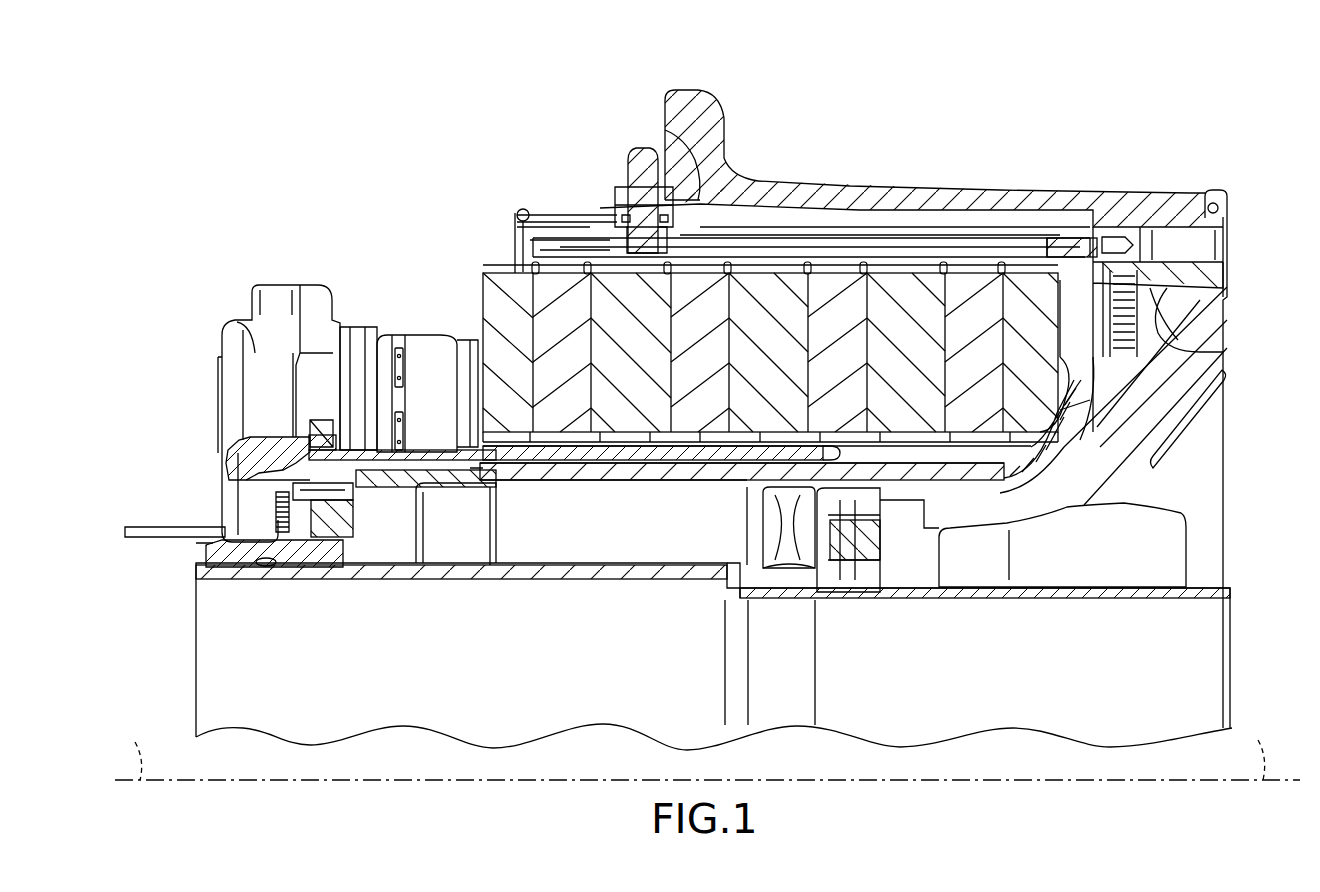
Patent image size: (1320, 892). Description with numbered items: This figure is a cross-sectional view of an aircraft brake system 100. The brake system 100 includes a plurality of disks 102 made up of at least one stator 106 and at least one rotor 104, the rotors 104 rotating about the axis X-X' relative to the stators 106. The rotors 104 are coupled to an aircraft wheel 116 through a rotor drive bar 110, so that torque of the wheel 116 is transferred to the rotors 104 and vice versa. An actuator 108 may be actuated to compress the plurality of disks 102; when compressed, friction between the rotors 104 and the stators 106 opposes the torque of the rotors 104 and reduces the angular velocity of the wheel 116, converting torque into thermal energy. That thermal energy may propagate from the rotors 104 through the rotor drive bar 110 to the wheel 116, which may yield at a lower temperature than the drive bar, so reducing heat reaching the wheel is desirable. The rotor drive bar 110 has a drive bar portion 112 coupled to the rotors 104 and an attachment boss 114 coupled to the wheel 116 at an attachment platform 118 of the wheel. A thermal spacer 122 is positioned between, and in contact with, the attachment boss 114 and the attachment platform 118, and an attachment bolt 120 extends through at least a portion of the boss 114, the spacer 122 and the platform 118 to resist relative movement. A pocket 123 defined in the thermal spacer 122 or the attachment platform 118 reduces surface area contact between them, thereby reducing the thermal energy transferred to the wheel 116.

The aircraft brake system 100 is at (325, 104).
The plurality of disks 102 is at (477, 266).
The rotor 104 is at (545, 420).
The stator 106 is at (645, 422).
The actuator 108 is at (435, 362).
The rotor drive bar 110 is at (840, 248).
The drive bar portion 112 is at (792, 248).
The attachment boss 114 is at (623, 227).
The aircraft wheel 116 is at (722, 150).
The attachment platform 118 is at (620, 190).
The attachment bolt 120 is at (642, 160).
The thermal spacer 122 is at (615, 212).
The pocket 123 is at (680, 232).